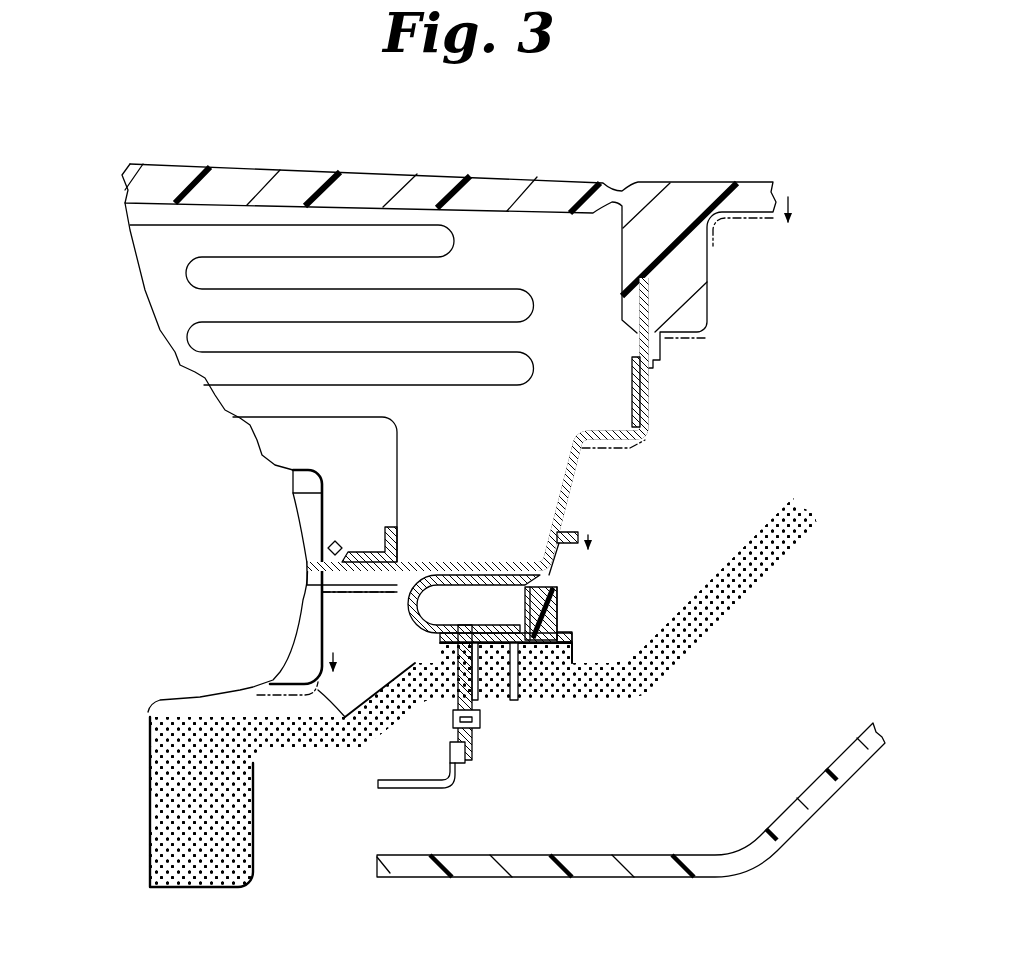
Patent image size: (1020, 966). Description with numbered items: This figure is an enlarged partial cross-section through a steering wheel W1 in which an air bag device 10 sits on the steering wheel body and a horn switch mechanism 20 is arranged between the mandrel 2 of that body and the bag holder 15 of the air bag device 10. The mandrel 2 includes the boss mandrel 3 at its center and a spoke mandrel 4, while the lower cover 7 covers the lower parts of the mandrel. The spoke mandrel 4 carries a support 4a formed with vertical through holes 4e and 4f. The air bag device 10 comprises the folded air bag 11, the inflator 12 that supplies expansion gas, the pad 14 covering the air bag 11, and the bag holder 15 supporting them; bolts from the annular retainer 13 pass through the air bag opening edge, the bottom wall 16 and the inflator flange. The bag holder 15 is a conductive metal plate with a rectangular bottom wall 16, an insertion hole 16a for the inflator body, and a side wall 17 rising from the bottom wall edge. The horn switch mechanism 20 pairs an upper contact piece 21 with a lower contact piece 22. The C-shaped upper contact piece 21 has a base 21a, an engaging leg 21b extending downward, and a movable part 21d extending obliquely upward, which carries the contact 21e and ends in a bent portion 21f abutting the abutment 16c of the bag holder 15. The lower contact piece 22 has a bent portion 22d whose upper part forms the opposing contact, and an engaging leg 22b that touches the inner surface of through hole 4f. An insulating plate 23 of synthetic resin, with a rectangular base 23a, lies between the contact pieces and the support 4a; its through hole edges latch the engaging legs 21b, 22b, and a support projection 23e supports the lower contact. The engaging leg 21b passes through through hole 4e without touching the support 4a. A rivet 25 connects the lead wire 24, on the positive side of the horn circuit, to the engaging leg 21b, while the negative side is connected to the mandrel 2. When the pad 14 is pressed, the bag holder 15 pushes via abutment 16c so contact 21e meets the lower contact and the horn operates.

The mandrel 2 is at (258, 897).
The boss mandrel 3 is at (203, 880).
The spoke mandrel 4 is at (793, 555).
The support 4a is at (560, 702).
The through hole 4e is at (384, 683).
The through hole 4f is at (497, 702).
The lower cover 7 is at (753, 856).
The air bag device 10 is at (127, 640).
The air bag 11 is at (186, 273).
The inflator 12 is at (300, 504).
The annular retainer 13 is at (360, 553).
The pad 14 is at (128, 185).
The bag holder 15 is at (430, 553).
The bottom wall 16 is at (462, 562).
The insertion hole 16a is at (313, 568).
The abutment 16c is at (538, 553).
The side wall 17 is at (632, 402).
The horn switch mechanism 20 is at (580, 572).
The upper contact piece 21 is at (397, 608).
The base 21a is at (425, 630).
The engaging leg 21b is at (476, 704).
The movable part 21d is at (428, 585).
The contact 21e is at (503, 574).
The bent portion 21f is at (575, 527).
The lower contact piece 22 is at (558, 588).
The engaging leg 22b is at (511, 700).
The bent portion 22d is at (537, 700).
The insulating plate 23 is at (573, 636).
The base 23a is at (564, 637).
The support projection 23e is at (560, 610).
The lead wire 24 is at (408, 790).
The rivet 25 is at (457, 722).
The steering wheel W1 is at (605, 128).